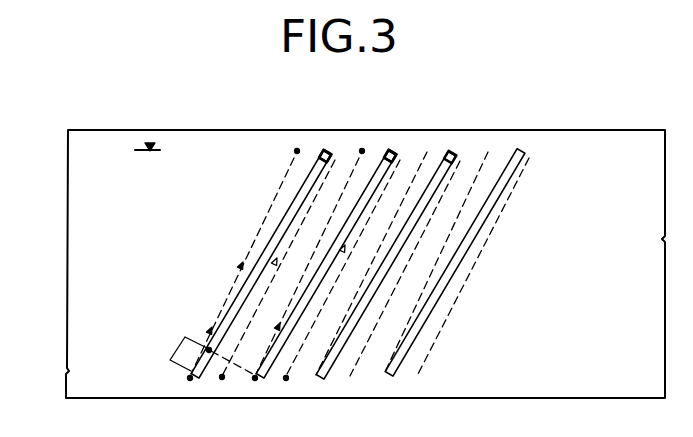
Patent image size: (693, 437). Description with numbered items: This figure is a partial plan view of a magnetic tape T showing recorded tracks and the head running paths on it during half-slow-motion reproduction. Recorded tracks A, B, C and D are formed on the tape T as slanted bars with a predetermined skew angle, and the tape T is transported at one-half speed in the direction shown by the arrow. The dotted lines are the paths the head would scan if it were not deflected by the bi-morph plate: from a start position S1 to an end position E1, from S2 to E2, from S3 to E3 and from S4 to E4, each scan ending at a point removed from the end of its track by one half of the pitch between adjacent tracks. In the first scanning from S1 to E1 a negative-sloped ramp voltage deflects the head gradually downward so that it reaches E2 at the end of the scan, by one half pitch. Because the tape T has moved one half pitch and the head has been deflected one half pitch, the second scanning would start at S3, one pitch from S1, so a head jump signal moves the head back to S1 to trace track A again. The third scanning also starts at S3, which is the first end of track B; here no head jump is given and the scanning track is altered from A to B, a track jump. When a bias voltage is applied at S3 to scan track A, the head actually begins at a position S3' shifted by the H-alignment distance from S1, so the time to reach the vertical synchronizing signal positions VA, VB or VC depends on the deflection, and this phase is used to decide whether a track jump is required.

The magnetic tape T is at (503, 362).
The track- A is at (280, 228).
The track- B is at (333, 250).
The recorded track C is at (397, 256).
The recorded track D is at (443, 287).
The end position E1 is at (297, 149).
The end position E2 is at (329, 150).
The end position E3 is at (363, 149).
The end position E4 is at (395, 150).
The vertical synchronizing signal position VA is at (332, 158).
The vertical synchronizing signal position VB is at (396, 158).
The vertical synchronizing signal position VC is at (458, 158).
The start position S1 is at (190, 381).
The start position S2 is at (222, 380).
The start position S3 is at (268, 405).
The start position S4 is at (287, 381).
The shifted scanning start position S3' is at (213, 328).